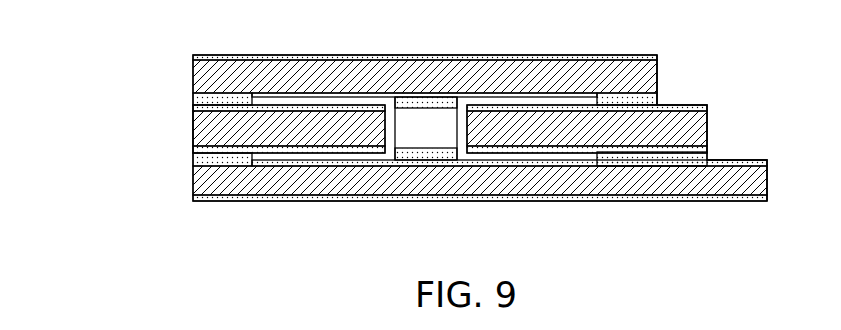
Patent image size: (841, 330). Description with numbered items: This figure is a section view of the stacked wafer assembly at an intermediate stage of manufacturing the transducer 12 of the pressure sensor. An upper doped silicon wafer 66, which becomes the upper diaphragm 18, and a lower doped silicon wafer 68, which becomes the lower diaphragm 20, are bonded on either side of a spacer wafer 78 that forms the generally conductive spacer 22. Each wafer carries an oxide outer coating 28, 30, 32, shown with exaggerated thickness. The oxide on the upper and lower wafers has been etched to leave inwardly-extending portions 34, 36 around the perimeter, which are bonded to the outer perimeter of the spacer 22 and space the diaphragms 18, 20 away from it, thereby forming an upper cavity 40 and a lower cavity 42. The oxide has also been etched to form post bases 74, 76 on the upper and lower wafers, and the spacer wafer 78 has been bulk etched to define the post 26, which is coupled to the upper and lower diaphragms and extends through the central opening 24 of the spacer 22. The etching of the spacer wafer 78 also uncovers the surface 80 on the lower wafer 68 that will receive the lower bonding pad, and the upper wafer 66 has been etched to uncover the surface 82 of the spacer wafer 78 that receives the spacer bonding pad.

The transducer 12 is at (124, 102).
The upper diaphragm 18 is at (317, 70).
The lower diaphragm 20 is at (353, 188).
The spacer 22 is at (585, 139).
The central opening 24 is at (388, 120).
The post 26 is at (443, 138).
The outer coating 28 is at (657, 57).
The outer coating 30 is at (193, 109).
The outer coating 32 is at (193, 160).
The inwardly-extending portion 34 is at (193, 99).
The inwardly-extending portion 36 is at (667, 155).
The upper cavity 40 is at (548, 97).
The lower cavity 42 is at (282, 160).
The upper doped silicon wafer 66 is at (193, 62).
The lower doped silicon wafer 68 is at (193, 197).
The post base 74 is at (428, 105).
The post base 76 is at (424, 152).
The spacer wafer 78 is at (702, 139).
The surface 80 is at (767, 159).
The surface 82 is at (707, 107).